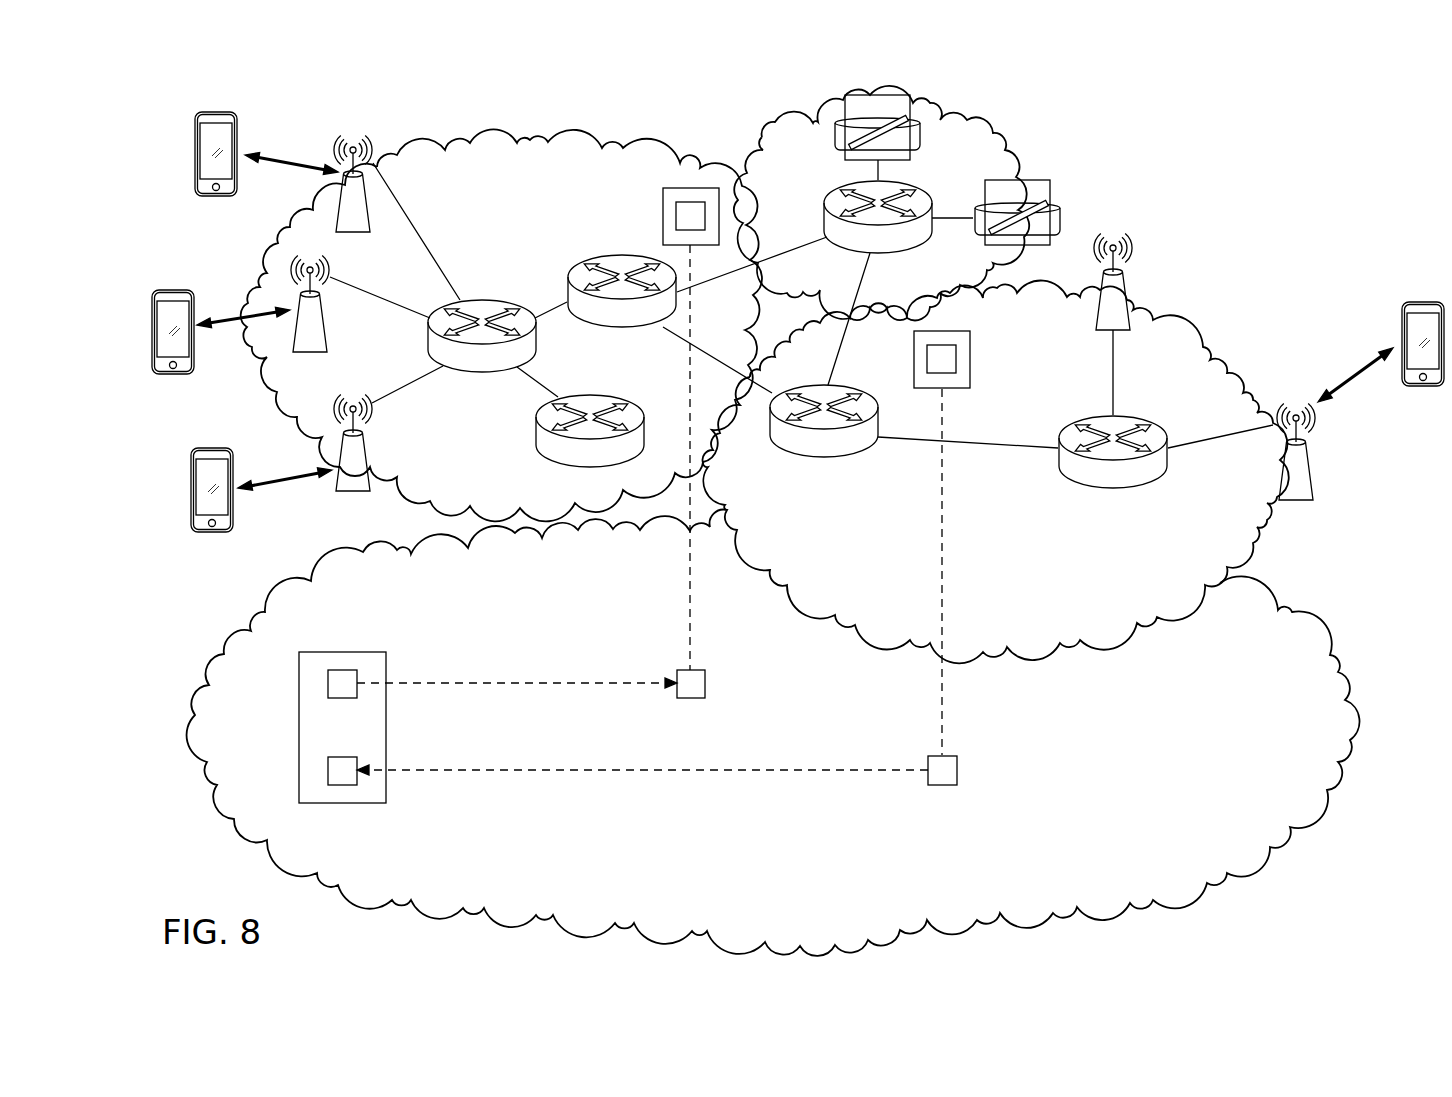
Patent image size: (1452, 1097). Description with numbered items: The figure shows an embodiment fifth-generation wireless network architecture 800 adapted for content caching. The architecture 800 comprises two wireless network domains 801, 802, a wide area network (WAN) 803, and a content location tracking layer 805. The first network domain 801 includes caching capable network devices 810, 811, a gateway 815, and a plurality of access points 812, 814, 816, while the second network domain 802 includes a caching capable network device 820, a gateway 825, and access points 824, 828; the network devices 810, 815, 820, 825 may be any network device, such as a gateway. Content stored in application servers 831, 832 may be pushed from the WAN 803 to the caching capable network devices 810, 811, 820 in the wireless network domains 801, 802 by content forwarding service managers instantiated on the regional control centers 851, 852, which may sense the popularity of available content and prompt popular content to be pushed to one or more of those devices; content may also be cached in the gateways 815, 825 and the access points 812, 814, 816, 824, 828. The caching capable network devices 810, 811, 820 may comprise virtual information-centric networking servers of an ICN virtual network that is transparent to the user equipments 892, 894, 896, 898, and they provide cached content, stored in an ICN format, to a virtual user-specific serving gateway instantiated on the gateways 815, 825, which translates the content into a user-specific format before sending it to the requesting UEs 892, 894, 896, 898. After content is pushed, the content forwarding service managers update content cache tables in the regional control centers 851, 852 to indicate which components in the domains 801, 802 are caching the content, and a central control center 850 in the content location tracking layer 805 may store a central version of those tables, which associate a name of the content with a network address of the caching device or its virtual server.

The 5G network architecture 800 is at (1240, 138).
The network domain 801 is at (265, 272).
The network domain 802 is at (1262, 548).
The wide area network (WAN) 803 is at (770, 126).
The content location tracking layer 805 is at (1103, 771).
The caching capable network device 810 is at (623, 328).
The caching capable network device 811 is at (538, 428).
The access point (AP) 812 is at (357, 492).
The access point (AP) 814 is at (324, 321).
The gateway 815 is at (488, 300).
The access point (AP) 816 is at (353, 233).
The caching capable network device 820 is at (826, 460).
The access point (AP) 824 is at (1128, 294).
The gateway 825 is at (1125, 490).
The access point (AP) 828 is at (1312, 472).
The application server 831 is at (912, 102).
The application server 832 is at (1050, 192).
The central control center 850 is at (297, 729).
The regional control center 851 is at (663, 216).
The regional control center 852 is at (972, 360).
The user equipment (UE) 892 is at (190, 490).
The user equipment (UE) 894 is at (150, 330).
The user equipment (UE) 896 is at (193, 157).
The user equipment (UE) 898 is at (1423, 302).